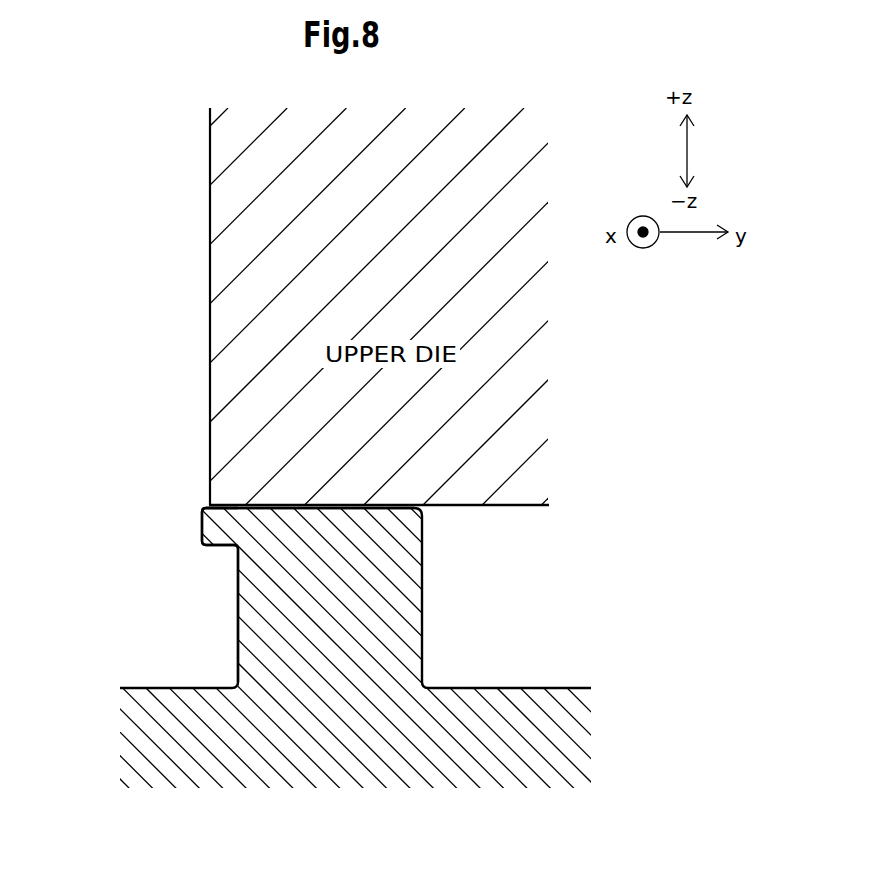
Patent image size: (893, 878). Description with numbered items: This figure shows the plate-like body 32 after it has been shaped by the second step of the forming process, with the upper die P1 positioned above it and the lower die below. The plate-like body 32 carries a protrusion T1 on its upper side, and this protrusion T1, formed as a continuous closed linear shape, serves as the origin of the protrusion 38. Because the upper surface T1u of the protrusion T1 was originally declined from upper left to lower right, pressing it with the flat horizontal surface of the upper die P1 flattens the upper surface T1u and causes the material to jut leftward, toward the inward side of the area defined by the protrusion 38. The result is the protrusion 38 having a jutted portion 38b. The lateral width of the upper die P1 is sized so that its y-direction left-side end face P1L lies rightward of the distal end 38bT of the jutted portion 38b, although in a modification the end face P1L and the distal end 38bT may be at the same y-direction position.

The plate-like body 32 is at (358, 775).
The protrusion 38 is at (433, 565).
The jutted portion 38b is at (203, 508).
The distal end 38bT is at (200, 528).
The upper die P1 is at (518, 506).
The y-direction left-side end face P1L is at (210, 270).
The protrusion T1 is at (238, 620).
The upper surface T1u is at (283, 505).